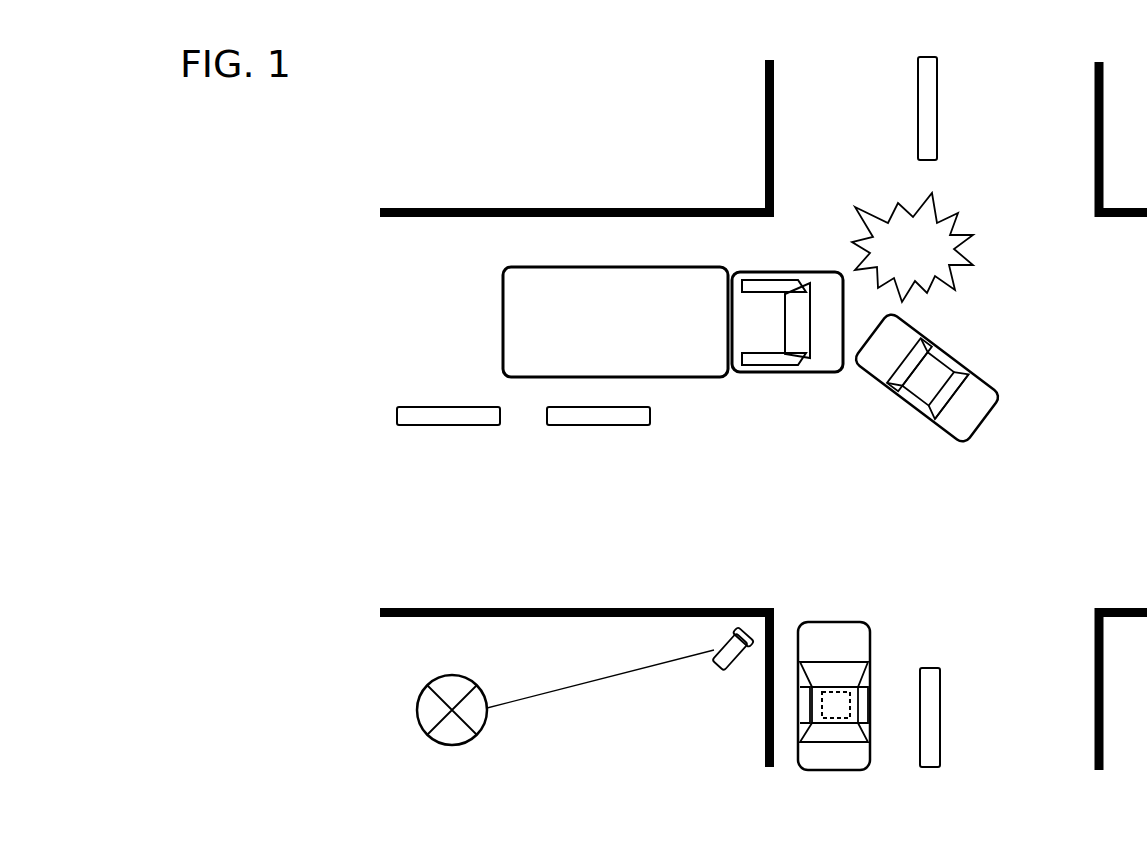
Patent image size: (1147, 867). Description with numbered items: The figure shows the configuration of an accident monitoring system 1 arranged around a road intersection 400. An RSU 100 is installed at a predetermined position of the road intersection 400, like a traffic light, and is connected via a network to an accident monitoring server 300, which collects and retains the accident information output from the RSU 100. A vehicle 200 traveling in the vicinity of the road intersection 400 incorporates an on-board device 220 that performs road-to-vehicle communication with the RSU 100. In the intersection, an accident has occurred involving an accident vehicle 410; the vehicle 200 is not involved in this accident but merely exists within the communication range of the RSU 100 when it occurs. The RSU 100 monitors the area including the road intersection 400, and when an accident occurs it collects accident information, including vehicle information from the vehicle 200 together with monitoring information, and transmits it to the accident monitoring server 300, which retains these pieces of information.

The accident monitoring system 1 is at (732, 750).
The RSU 100 is at (710, 663).
The vehicle 200 is at (870, 642).
The on-board device 220 is at (818, 703).
The accident monitoring server 300 is at (476, 681).
The road intersection 400 is at (1027, 447).
The accident vehicle 410 is at (685, 270).